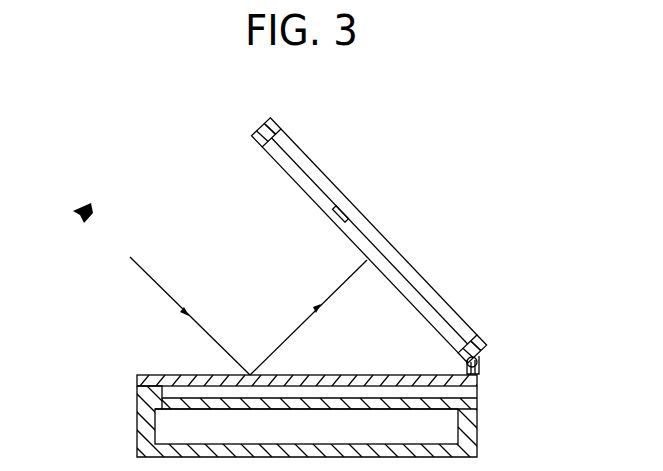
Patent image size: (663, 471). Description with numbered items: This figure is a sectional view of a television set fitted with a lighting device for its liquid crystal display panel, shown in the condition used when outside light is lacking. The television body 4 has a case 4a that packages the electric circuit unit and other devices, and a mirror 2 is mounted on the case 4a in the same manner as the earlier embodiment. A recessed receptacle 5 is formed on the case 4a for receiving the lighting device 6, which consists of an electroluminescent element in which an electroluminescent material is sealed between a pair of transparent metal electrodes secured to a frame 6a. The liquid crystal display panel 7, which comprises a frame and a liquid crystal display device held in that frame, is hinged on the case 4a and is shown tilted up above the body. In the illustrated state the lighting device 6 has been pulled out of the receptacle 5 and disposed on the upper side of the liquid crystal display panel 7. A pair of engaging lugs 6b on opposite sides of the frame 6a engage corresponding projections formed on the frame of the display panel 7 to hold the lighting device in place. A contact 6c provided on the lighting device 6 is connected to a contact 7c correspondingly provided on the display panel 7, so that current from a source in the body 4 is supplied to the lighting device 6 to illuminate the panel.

The mirror 2 is at (153, 377).
The television body 4 is at (483, 423).
The case 4a is at (470, 445).
The recessed receptacle 5 is at (470, 392).
The lighting device 6 is at (416, 266).
The frame 6a is at (278, 126).
The engaging lugs 6b is at (343, 209).
The contact 6c is at (486, 340).
The liquid crystal display panel 7 is at (297, 175).
The contact 7c is at (482, 359).